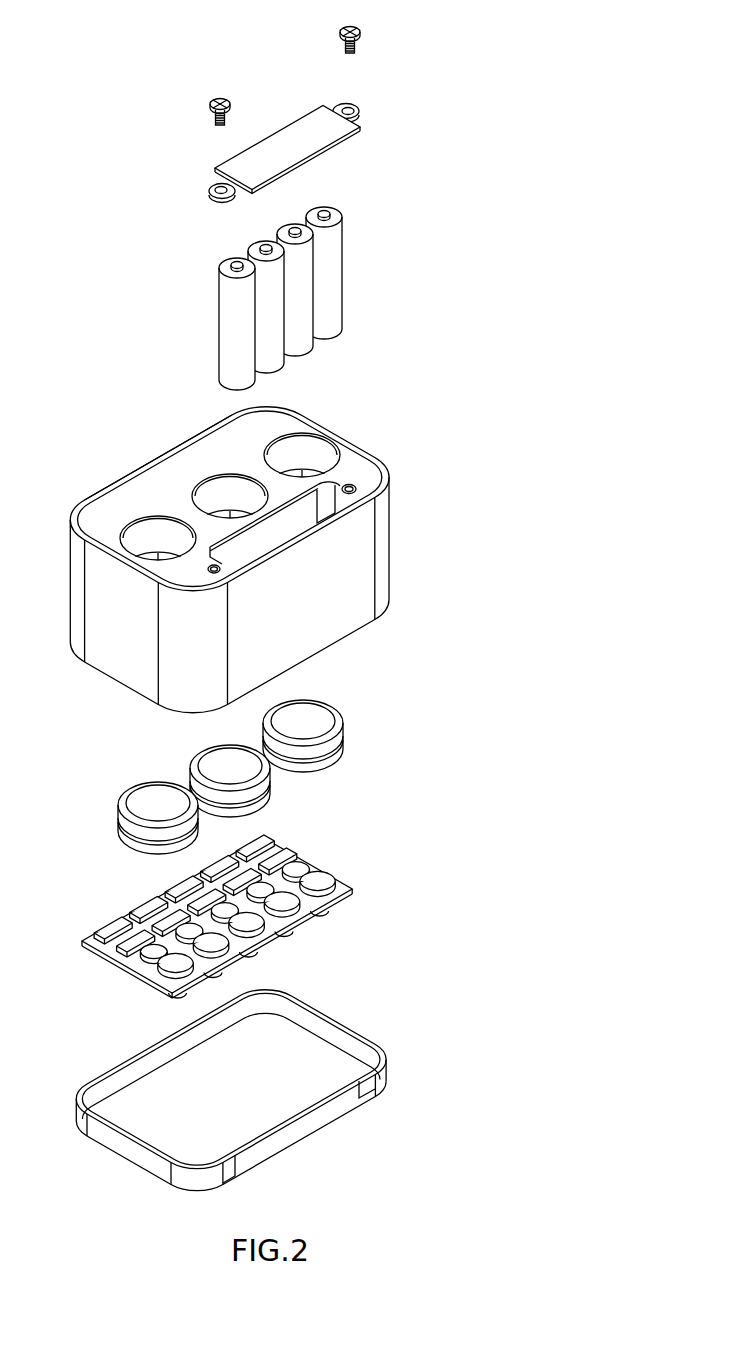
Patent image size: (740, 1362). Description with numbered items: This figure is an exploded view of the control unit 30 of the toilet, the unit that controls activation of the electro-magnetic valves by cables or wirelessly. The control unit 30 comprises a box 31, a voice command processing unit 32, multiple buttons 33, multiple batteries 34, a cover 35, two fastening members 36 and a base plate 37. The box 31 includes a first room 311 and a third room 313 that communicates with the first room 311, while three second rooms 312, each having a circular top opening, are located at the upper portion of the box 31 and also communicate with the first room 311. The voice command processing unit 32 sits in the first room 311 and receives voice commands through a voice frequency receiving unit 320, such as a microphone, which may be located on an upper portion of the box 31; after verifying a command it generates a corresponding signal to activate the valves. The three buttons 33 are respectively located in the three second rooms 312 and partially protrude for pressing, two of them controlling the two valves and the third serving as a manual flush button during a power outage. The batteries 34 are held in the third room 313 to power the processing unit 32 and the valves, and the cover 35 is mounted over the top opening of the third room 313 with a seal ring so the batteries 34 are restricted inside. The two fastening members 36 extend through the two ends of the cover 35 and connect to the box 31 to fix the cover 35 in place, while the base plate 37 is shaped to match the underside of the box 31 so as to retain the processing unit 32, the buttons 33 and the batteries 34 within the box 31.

The control unit 30 is at (256, 556).
The box 31 is at (236, 556).
The first room 311 is at (152, 553).
The second rooms 312 is at (313, 447).
The third room 313 is at (302, 517).
The voice command processing unit 32 is at (263, 916).
The voice frequency receiving unit 320 is at (325, 883).
The buttons 33 is at (323, 715).
The batteries 34 is at (333, 270).
The cover 35 is at (335, 135).
The fastening members 36 is at (213, 102).
The base plate 37 is at (288, 1127).